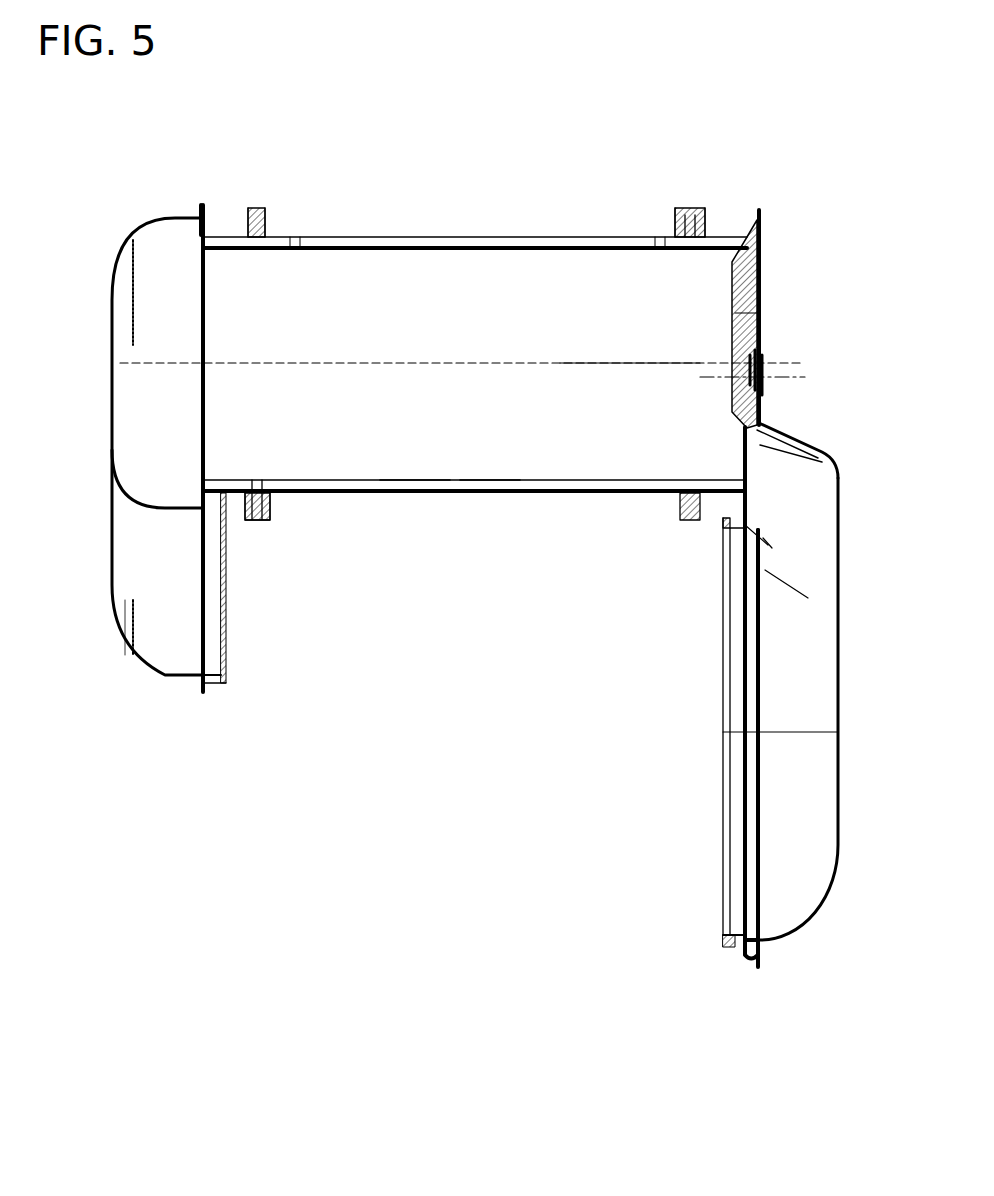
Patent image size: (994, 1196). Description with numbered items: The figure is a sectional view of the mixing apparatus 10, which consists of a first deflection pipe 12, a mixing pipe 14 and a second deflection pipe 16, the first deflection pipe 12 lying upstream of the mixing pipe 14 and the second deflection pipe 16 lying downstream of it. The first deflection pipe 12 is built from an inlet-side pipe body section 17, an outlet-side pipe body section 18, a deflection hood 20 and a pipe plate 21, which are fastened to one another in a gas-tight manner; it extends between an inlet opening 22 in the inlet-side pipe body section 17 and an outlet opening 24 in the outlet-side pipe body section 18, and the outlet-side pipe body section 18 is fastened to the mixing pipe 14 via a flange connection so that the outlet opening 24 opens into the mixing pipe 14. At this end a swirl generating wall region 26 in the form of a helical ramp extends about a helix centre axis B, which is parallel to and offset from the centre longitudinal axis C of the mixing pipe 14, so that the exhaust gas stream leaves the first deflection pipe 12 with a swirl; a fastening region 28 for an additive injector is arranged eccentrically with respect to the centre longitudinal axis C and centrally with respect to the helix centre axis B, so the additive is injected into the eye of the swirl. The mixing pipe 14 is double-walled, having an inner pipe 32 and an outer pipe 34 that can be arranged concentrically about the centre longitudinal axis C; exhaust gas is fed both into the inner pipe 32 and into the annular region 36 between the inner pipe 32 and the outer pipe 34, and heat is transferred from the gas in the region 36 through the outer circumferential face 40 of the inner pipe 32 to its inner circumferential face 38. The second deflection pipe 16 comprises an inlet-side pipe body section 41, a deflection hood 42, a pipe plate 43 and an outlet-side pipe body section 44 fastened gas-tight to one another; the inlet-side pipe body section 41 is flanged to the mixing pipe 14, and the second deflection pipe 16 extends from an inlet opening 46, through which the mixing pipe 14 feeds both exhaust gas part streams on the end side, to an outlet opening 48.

The mixing apparatus 10 is at (492, 114).
The first deflection pipe 12 is at (635, 937).
The mixing pipe 14 is at (432, 207).
The second deflection pipe 16 is at (275, 688).
The inlet-side pipe body section 17 is at (723, 938).
The outlet-side pipe body section 18 is at (713, 215).
The deflection hood 20 is at (845, 640).
The pipe plate 21 is at (723, 522).
The inlet opening 22 is at (723, 790).
The outlet opening 24 is at (737, 215).
The swirl generating wall region 26 is at (795, 430).
The fastening region 28 is at (765, 348).
The inner pipe 32 is at (415, 482).
The outer pipe 34 is at (557, 493).
The region 36 is at (648, 492).
The inner circumferential face 38 is at (345, 477).
The outer circumferential face 40 is at (490, 482).
The inlet-side pipe body section 41 is at (208, 222).
The deflection hood 42 is at (112, 332).
The pipe plate 43 is at (226, 530).
The outlet-side pipe body section 44 is at (208, 692).
The inlet opening 46 is at (214, 302).
The outlet opening 48 is at (226, 640).
The helix centre axis B is at (790, 377).
The centre longitudinal axis C is at (667, 367).